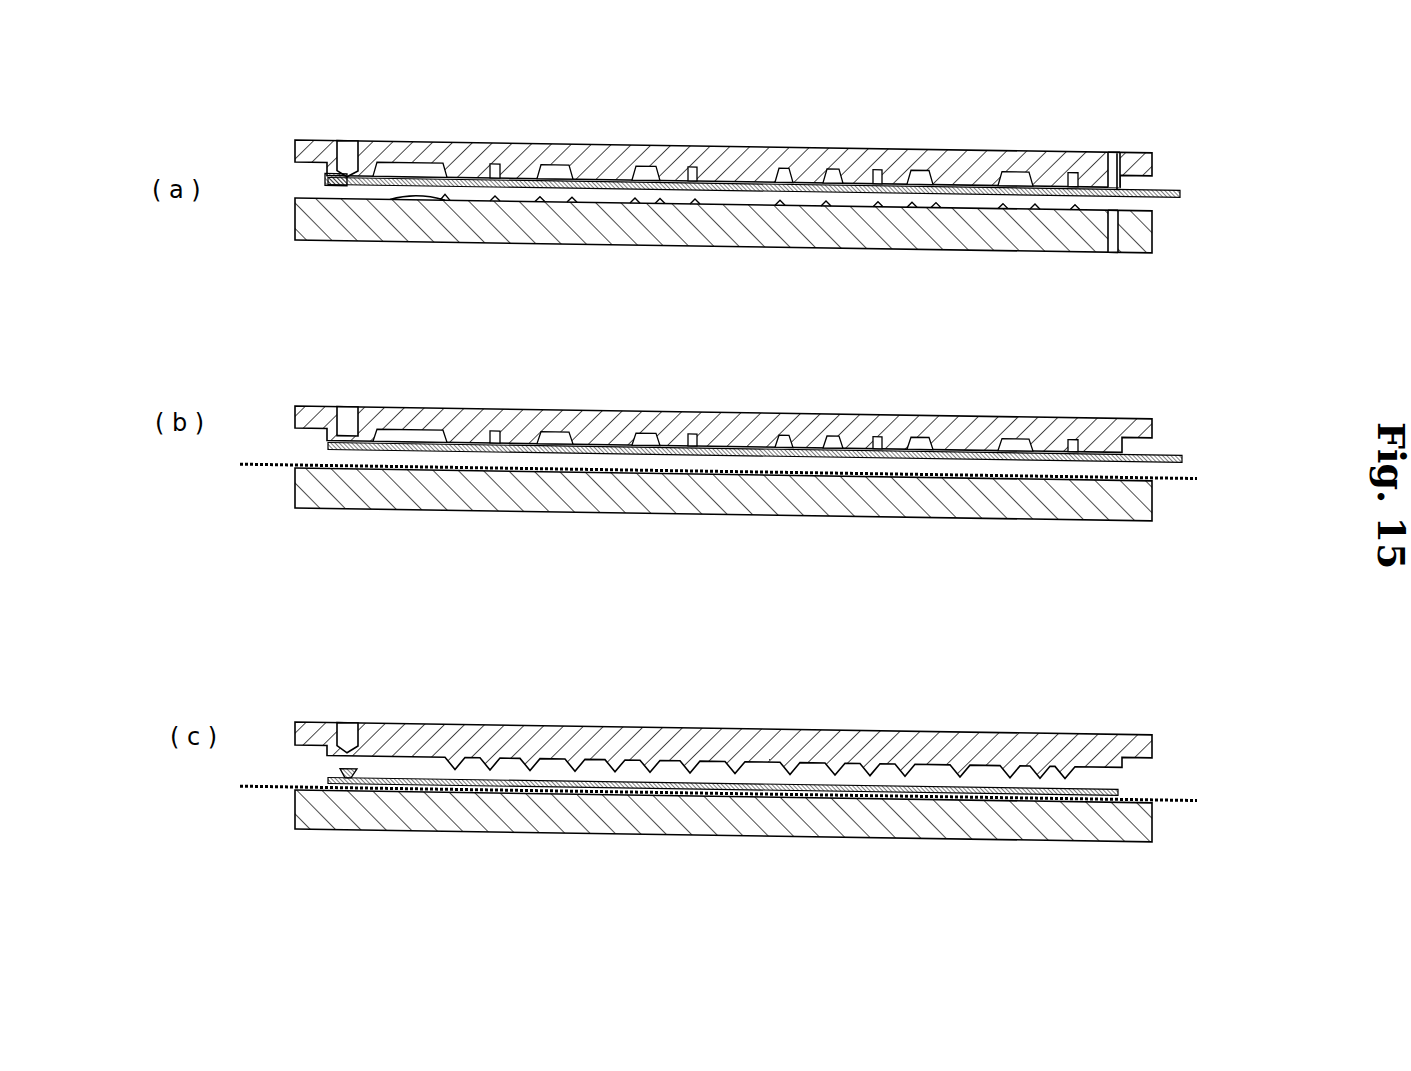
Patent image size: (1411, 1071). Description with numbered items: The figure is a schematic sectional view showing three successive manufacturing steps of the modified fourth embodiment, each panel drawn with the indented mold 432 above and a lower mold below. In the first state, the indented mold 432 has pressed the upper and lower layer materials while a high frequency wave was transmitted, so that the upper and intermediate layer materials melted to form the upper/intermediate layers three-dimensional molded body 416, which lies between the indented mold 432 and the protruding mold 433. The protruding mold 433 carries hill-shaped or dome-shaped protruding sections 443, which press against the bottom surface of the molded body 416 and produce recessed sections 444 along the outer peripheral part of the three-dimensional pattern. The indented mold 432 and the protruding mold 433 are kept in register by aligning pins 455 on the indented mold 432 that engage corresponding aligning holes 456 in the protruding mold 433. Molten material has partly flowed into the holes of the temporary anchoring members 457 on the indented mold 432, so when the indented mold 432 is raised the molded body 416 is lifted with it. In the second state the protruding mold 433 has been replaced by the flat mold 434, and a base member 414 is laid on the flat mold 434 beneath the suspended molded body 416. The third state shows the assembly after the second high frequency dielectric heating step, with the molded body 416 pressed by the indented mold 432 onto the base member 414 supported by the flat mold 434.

The base member 414 is at (1183, 485).
The upper/intermediate layers three-dimensional molded body 416 is at (1183, 192).
The indented mold 432 is at (1163, 159).
The protruding mold 433 is at (1163, 232).
The flat mold 434 is at (1163, 514).
The protruding sections 443 is at (403, 200).
The recessed sections 444 is at (600, 185).
The aligning pins 455 is at (1117, 153).
The aligning holes 456 is at (1113, 253).
The temporary anchoring members 457 is at (323, 176).